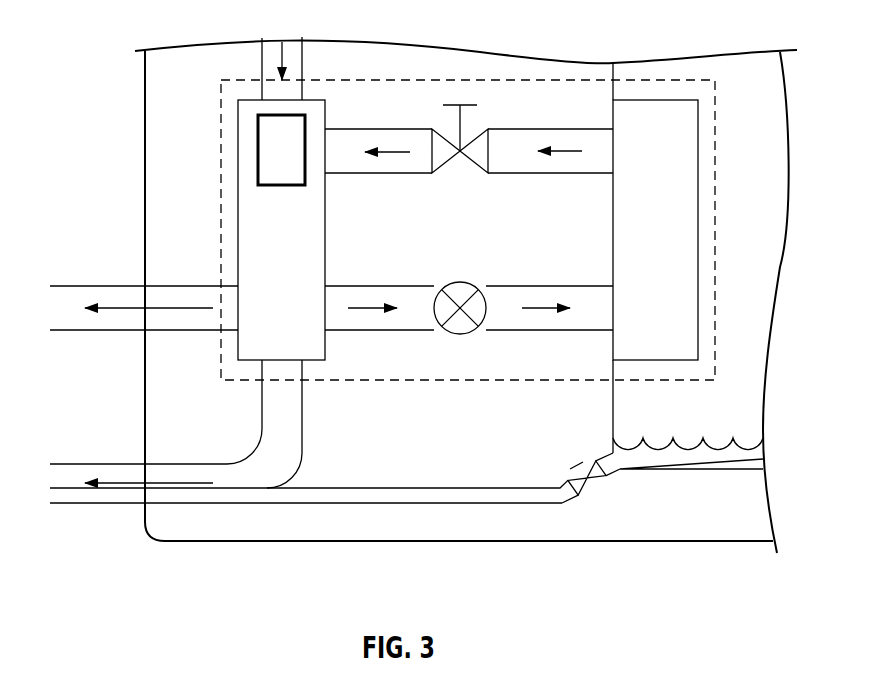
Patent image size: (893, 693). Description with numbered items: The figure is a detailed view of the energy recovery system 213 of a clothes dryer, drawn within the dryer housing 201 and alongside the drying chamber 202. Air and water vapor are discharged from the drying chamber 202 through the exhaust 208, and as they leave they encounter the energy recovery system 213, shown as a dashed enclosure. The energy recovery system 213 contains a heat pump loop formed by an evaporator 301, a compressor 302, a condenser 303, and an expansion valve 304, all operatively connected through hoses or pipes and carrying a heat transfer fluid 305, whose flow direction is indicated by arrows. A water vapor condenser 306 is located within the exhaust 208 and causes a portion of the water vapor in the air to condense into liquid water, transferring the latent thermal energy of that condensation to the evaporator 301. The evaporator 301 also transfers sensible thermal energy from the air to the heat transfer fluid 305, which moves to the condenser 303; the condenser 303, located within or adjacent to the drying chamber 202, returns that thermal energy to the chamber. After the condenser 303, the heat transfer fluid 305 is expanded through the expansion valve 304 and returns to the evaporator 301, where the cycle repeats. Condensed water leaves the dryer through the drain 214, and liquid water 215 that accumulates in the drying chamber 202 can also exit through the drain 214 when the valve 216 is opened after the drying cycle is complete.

The housing 201 is at (144, 102).
The drying chamber 202 is at (758, 80).
The exhaust 208 is at (73, 285).
The energy recovery system 213 is at (220, 193).
The drain 214 is at (73, 463).
The liquid water 215 is at (655, 460).
The valve 216 is at (568, 468).
The evaporator 301 is at (327, 230).
The compressor 302 is at (460, 283).
The condenser 303 is at (698, 193).
The expansion valve 304 is at (466, 125).
The heat transfer fluid 305 is at (378, 150).
The water vapor condenser 306 is at (257, 122).